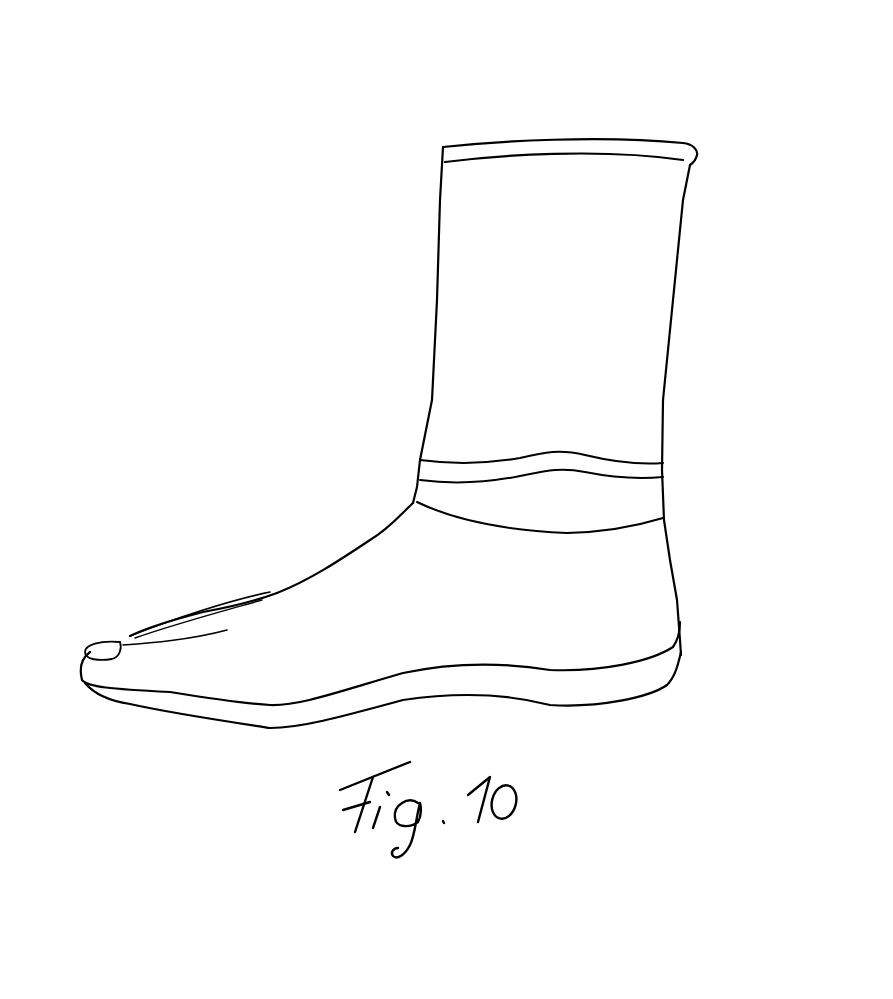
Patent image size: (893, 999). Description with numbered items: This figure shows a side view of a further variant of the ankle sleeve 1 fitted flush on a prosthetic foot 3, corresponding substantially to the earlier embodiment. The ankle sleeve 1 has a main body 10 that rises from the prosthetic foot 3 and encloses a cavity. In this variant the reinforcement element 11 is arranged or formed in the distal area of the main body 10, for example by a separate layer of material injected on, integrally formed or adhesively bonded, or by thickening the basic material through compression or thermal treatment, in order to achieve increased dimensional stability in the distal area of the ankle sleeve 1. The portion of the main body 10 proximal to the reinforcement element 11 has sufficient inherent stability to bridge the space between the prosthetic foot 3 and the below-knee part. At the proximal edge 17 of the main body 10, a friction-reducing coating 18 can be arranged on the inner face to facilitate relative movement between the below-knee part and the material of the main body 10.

The ankle sleeve 1 is at (715, 361).
The prosthetic foot 3 is at (730, 600).
The main body 10 is at (453, 259).
The reinforcement element 11 is at (653, 498).
The proximal edge 17 is at (683, 145).
The friction-reducing coating 18 is at (468, 141).